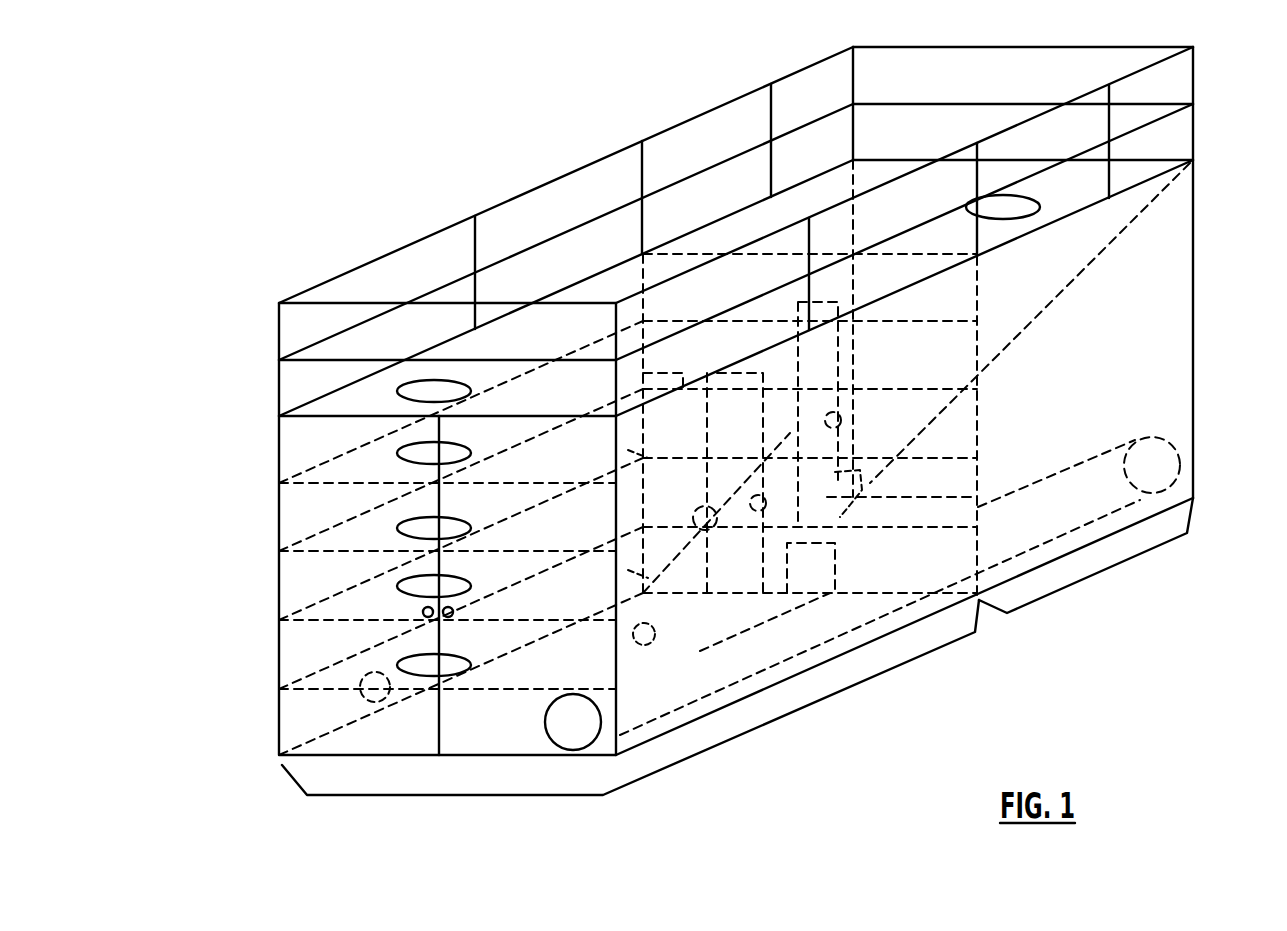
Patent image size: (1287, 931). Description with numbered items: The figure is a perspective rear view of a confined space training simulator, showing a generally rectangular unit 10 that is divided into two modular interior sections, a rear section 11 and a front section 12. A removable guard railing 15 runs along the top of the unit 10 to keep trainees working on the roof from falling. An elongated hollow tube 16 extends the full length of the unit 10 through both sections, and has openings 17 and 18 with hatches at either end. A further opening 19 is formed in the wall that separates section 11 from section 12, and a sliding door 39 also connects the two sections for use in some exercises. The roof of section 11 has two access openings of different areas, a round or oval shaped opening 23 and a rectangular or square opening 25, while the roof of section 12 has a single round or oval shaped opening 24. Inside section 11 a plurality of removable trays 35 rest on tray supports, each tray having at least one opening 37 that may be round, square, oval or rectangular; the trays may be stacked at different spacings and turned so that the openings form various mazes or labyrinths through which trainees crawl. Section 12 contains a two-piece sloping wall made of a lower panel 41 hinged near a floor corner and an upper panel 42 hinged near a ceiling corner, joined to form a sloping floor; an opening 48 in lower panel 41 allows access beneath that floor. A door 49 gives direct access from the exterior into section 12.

The generally rectangular unit 10 is at (477, 158).
The rear section 11 is at (603, 795).
The front section 12 is at (1100, 572).
The removable guard railing 15 is at (268, 305).
The elongated hollow tube 16 is at (787, 637).
The opening 17 is at (560, 723).
The opening 18 is at (1158, 463).
The opening 19 is at (822, 575).
The round or oval shaped opening 23 is at (443, 388).
The round or oval shaped opening 24 is at (1035, 195).
The rectangular or square opening 25 is at (660, 375).
The removable tray 35 is at (337, 678).
The opening 37 is at (397, 588).
The sliding door 39 is at (745, 378).
The lower panel 41 is at (897, 431).
The upper panel 42 is at (1070, 255).
The opening 48 is at (825, 495).
The door 49 is at (817, 343).